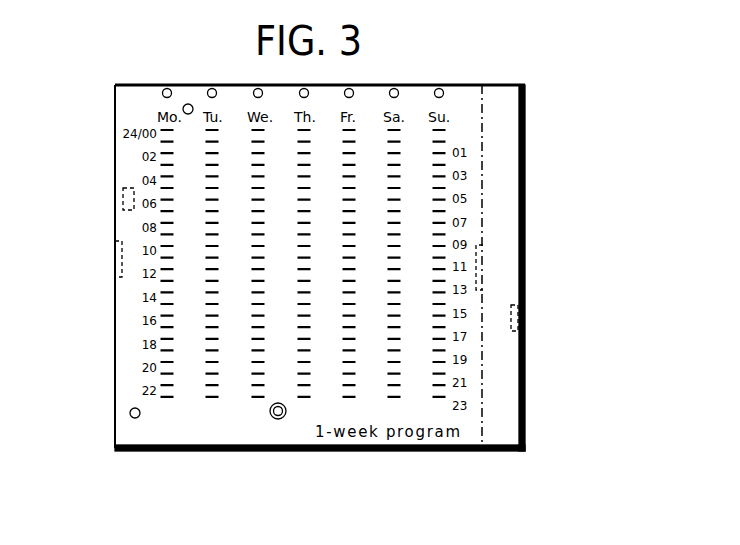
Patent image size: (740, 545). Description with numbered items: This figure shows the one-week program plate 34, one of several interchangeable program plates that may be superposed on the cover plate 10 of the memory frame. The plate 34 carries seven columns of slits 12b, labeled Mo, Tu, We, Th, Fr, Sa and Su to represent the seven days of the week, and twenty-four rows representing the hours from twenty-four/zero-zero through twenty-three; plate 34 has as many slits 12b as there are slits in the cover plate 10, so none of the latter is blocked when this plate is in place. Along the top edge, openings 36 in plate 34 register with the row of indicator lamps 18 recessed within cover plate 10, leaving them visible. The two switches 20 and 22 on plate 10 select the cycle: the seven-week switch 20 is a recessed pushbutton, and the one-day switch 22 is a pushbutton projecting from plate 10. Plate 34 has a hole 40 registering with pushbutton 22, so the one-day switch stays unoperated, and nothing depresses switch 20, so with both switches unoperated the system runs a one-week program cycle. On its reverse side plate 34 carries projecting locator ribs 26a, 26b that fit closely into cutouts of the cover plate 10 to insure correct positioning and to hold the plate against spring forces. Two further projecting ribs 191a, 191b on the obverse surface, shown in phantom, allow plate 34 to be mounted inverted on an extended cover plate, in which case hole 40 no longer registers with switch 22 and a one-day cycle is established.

The cover plate 10 is at (471, 167).
The slits 12b is at (205, 373).
The indicator lamps 18 is at (436, 91).
The 7-week switch 20 is at (190, 103).
The 1-day switch 22 is at (279, 420).
The locator rib 26a is at (116, 264).
The locator rib 26b is at (480, 268).
The program plate 34 is at (463, 108).
The openings 36 is at (257, 89).
The hole 40 is at (283, 419).
The projecting rib 191a is at (125, 196).
The projecting rib 191b is at (520, 312).